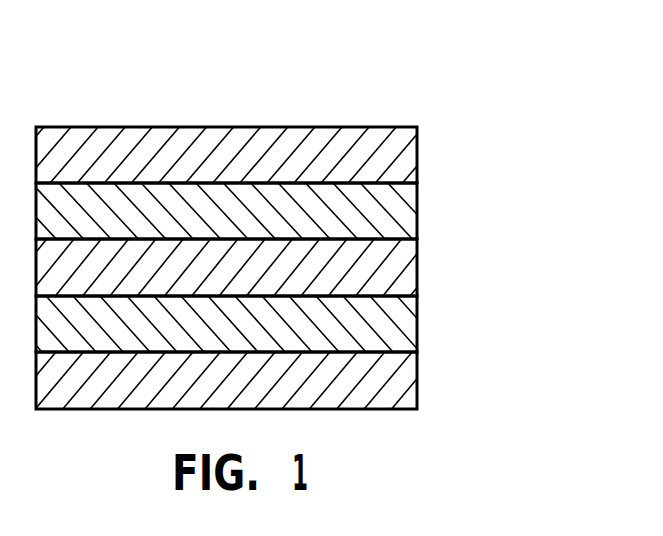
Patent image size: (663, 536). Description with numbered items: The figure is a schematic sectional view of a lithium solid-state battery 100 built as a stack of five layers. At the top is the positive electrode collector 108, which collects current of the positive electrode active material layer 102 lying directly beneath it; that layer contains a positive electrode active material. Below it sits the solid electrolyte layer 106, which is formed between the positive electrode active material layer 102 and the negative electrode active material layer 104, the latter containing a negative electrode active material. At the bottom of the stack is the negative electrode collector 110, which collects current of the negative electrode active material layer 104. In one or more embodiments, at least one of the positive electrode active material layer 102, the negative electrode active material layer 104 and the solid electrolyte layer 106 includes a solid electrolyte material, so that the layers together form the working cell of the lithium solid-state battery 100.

The lithium solid-state battery 100 is at (263, 215).
The positive electrode collector 108 is at (417, 158).
The positive electrode active material layer 102 is at (417, 215).
The solid electrolyte layer 106 is at (417, 270).
The negative electrode active material layer 104 is at (417, 327).
The negative electrode collector 110 is at (417, 382).